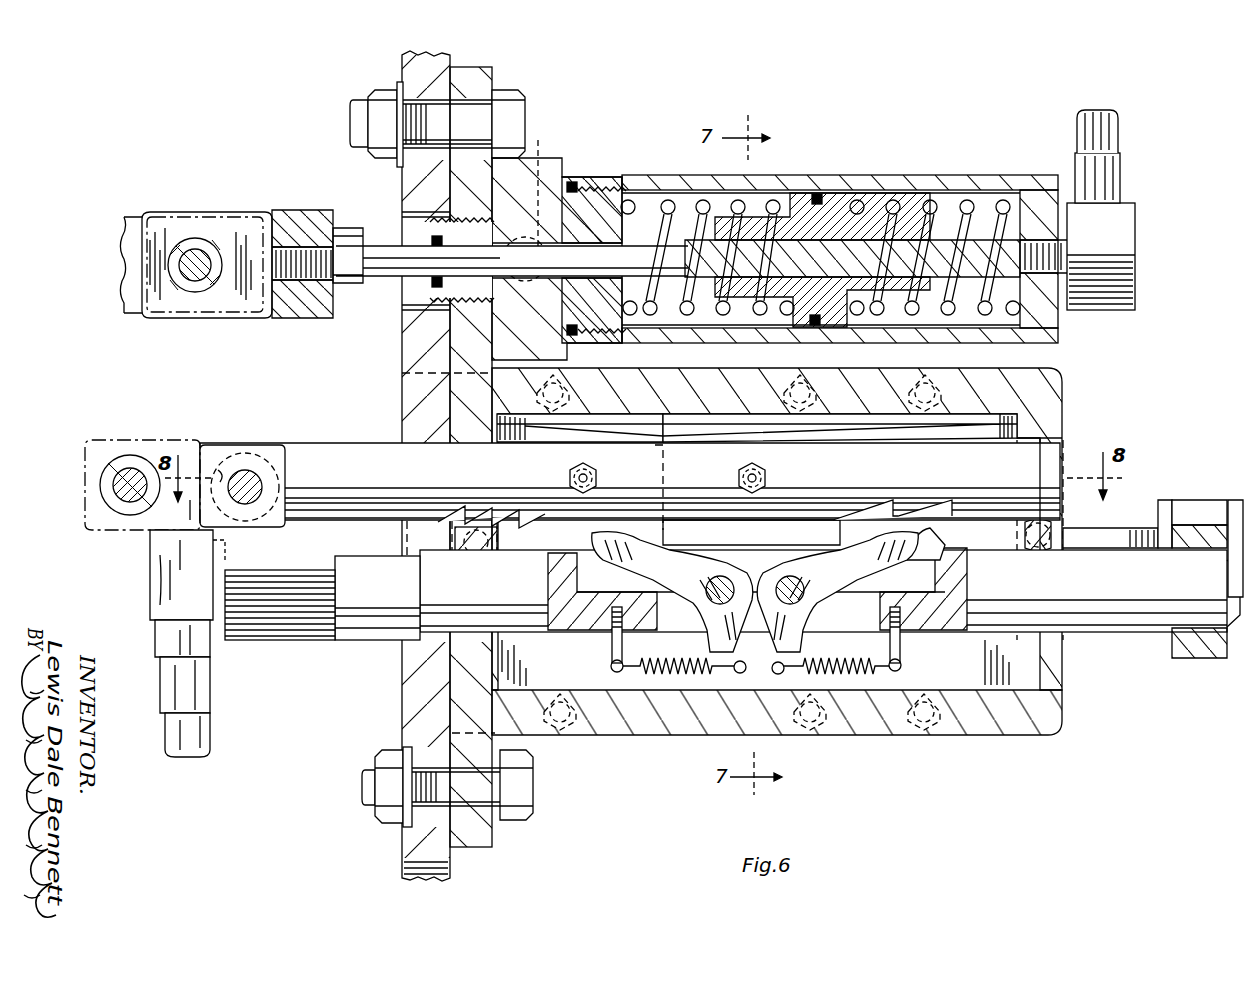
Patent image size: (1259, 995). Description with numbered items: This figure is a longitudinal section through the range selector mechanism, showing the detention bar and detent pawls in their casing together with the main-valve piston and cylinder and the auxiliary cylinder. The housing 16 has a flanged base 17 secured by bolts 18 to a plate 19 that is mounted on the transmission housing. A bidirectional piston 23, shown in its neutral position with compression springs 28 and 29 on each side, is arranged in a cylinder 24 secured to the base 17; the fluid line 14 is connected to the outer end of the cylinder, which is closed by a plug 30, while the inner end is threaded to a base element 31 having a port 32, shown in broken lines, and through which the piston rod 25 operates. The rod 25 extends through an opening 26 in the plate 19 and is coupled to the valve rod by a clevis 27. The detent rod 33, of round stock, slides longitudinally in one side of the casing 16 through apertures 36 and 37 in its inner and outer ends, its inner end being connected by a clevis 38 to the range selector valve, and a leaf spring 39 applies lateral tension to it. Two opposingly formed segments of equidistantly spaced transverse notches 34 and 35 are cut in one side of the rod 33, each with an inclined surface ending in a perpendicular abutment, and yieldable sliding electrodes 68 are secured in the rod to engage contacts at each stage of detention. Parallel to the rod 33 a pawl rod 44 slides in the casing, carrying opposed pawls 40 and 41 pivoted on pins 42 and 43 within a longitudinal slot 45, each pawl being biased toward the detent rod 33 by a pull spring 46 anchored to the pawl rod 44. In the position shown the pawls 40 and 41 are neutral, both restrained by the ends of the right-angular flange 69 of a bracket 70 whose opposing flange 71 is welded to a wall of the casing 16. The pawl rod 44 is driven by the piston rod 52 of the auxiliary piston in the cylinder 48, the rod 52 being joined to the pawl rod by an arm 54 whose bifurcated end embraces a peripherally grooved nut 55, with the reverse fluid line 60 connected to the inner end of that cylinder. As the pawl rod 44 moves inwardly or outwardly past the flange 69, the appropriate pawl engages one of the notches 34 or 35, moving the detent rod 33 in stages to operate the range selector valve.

The fluid line 14 is at (1076, 130).
The housing 16 is at (975, 722).
The flanged base 17 is at (493, 78).
The bolts 18 is at (525, 108).
The plate 19 is at (402, 393).
The bidirectional piston 23 is at (840, 193).
The cylinder 24 is at (908, 175).
The piston rod 25 is at (388, 246).
The opening 26 is at (402, 302).
The clevis 27 is at (300, 318).
The compression spring 28 is at (985, 200).
The compression spring 29 is at (667, 207).
The plug 30 is at (1058, 320).
The base element 31 is at (597, 190).
The port 32 is at (560, 160).
The detent rod 33 is at (1040, 460).
The transverse notches 34 is at (495, 480).
The transverse notches 35 is at (930, 480).
The aperture 36 is at (398, 440).
The aperture 37 is at (1062, 450).
The clevis 38 is at (220, 445).
The leaf spring 39 is at (880, 418).
The pawl 40 is at (660, 577).
The pawl 41 is at (850, 572).
The pin 42 is at (708, 596).
The pin 43 is at (803, 596).
The pawl rod 44 is at (375, 625).
The longitudinal slot 45 is at (925, 545).
The pull spring 46 is at (695, 660).
The cylinder 48 is at (282, 630).
The piston rod 52 is at (1100, 528).
The arm 54 is at (1195, 658).
The peripherally grooved nut 55 is at (1165, 500).
The reverse fluid line 60 is at (205, 735).
The yieldable sliding electrodes 68 is at (590, 478).
The right-angular flange 69 is at (700, 540).
The bracket 70 is at (660, 418).
The opposing flange 71 is at (668, 460).